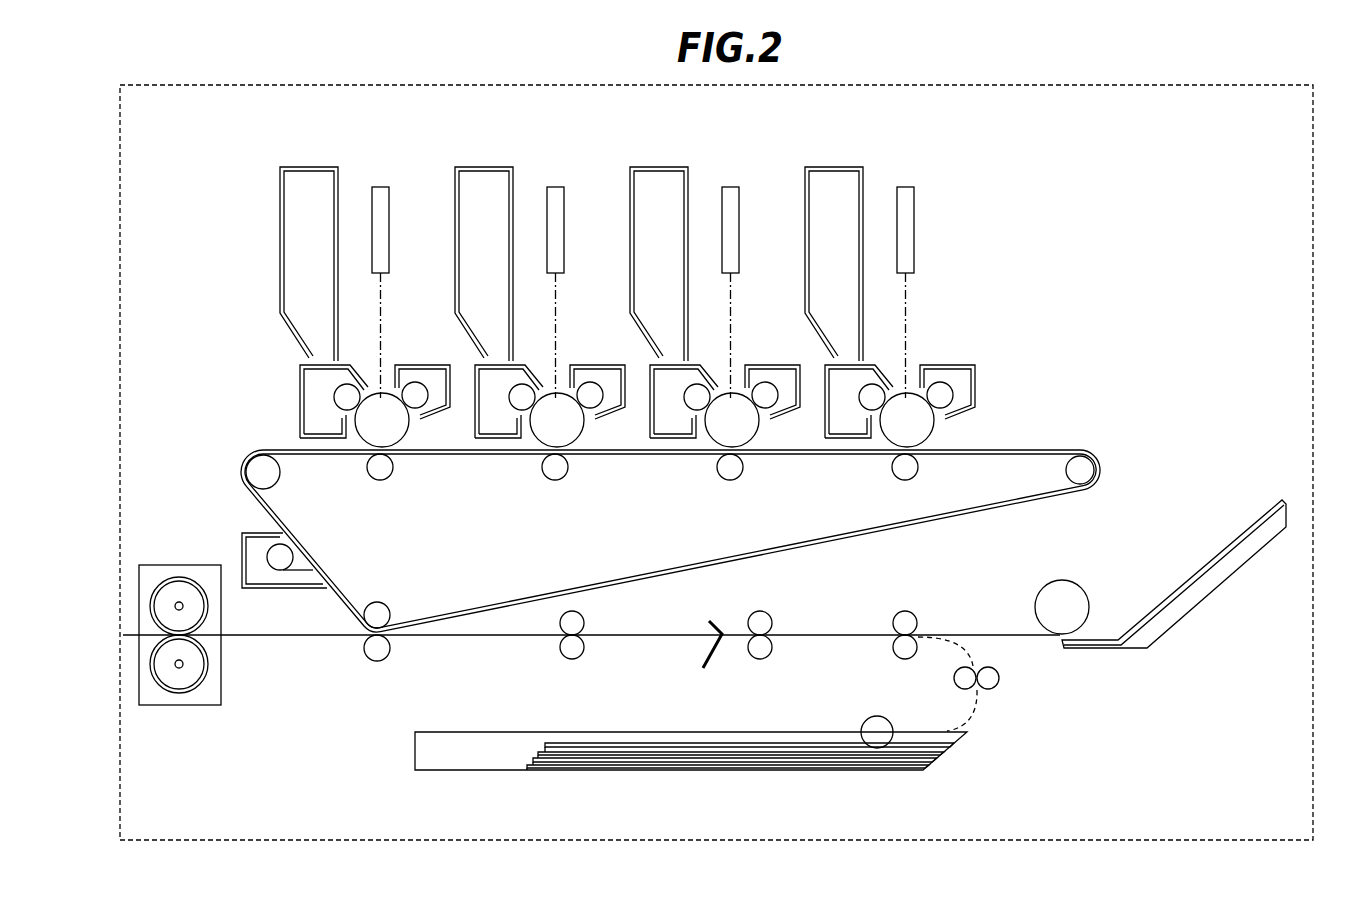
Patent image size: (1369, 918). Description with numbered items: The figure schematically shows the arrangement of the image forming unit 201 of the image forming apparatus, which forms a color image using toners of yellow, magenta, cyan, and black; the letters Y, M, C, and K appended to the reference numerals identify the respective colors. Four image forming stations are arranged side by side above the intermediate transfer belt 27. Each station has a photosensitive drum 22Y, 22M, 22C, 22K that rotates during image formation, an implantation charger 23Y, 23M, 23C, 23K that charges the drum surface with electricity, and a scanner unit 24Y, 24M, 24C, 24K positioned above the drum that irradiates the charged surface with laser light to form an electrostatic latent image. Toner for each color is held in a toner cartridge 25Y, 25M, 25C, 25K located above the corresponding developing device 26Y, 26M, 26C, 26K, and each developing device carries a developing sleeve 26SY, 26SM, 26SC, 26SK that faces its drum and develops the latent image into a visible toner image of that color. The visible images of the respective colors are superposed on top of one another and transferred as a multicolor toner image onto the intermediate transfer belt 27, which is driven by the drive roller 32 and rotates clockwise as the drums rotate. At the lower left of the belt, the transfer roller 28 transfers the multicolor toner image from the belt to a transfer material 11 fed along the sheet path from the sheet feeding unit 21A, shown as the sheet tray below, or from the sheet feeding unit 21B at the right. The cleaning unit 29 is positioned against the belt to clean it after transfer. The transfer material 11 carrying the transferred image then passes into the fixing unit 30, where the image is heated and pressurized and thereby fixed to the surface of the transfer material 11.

The image forming unit 201 is at (1315, 192).
The toner cartridge 25Y is at (305, 194).
The toner cartridge 25M is at (480, 194).
The toner cartridge 25C is at (655, 194).
The toner cartridge 25K is at (830, 194).
The scanner unit 24Y is at (381, 194).
The scanner unit 24M is at (556, 194).
The scanner unit 24C is at (731, 194).
The scanner unit 24K is at (906, 194).
The developing device 26Y is at (320, 426).
The developing device 26M is at (495, 426).
The developing device 26C is at (670, 426).
The developing device 26K is at (845, 426).
The developing sleeve 26SY is at (348, 403).
The developing sleeve 26SM is at (523, 403).
The developing sleeve 26SC is at (698, 403).
The developing sleeve 26SK is at (873, 403).
The photosensitive drum 22Y is at (384, 403).
The photosensitive drum 22M is at (559, 403).
The photosensitive drum 22C is at (734, 403).
The photosensitive drum 22K is at (909, 403).
The implantation charger 23Y is at (437, 410).
The implantation charger 23M is at (612, 410).
The implantation charger 23C is at (787, 410).
The implantation charger 23K is at (962, 410).
The intermediate transfer belt 27 is at (520, 599).
The drive roller 32 is at (262, 472).
The transfer roller 28 is at (383, 650).
The cleaning unit 29 is at (252, 550).
The fixing unit 30 is at (208, 695).
The transfer material 11 is at (658, 738).
The sheet feeding unit 21A is at (788, 745).
The sheet feeding unit 21B is at (1205, 562).